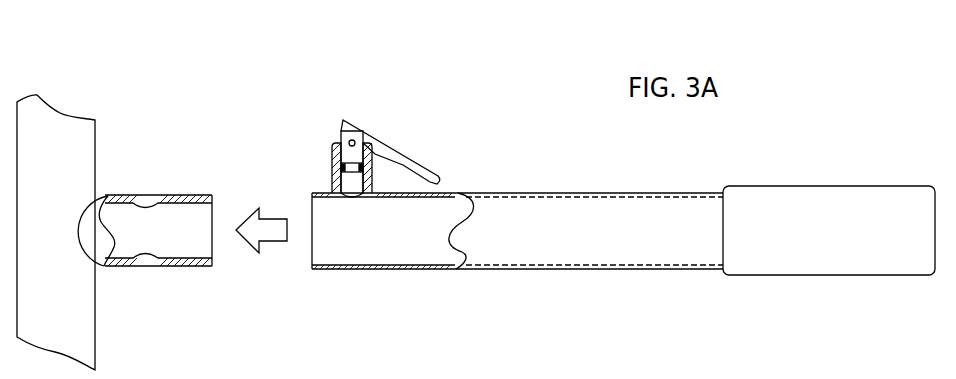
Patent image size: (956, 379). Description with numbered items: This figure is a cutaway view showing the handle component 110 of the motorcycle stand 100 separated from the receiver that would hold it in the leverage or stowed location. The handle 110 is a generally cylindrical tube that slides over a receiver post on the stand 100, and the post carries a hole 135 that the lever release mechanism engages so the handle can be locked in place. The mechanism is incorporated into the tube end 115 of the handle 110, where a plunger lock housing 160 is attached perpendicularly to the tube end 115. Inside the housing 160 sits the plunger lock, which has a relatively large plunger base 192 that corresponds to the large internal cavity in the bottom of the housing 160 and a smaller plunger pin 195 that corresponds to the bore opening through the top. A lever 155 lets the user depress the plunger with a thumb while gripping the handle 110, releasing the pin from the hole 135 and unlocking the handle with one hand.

The motorcycle stand 100 is at (35, 122).
The handle component 110 is at (593, 266).
The tube end 115 is at (392, 250).
The hole in secondary receiver post 135 is at (135, 203).
The lever 155 is at (405, 163).
The plunger lock housing 160 is at (332, 155).
The plunger base 192 is at (349, 183).
The plunger pin 195 is at (354, 140).